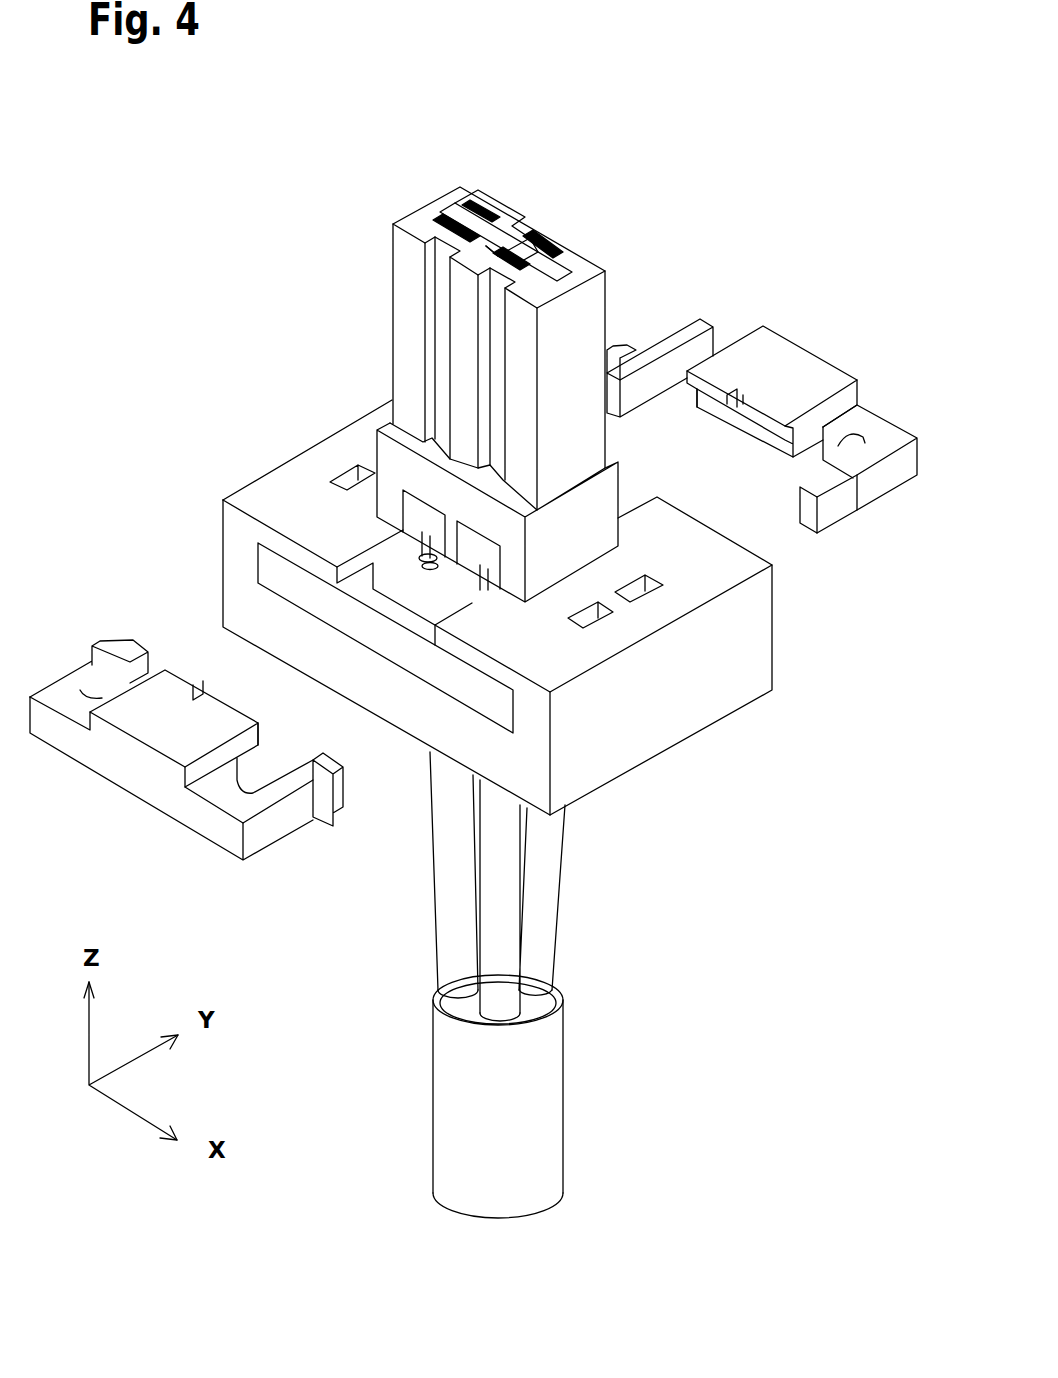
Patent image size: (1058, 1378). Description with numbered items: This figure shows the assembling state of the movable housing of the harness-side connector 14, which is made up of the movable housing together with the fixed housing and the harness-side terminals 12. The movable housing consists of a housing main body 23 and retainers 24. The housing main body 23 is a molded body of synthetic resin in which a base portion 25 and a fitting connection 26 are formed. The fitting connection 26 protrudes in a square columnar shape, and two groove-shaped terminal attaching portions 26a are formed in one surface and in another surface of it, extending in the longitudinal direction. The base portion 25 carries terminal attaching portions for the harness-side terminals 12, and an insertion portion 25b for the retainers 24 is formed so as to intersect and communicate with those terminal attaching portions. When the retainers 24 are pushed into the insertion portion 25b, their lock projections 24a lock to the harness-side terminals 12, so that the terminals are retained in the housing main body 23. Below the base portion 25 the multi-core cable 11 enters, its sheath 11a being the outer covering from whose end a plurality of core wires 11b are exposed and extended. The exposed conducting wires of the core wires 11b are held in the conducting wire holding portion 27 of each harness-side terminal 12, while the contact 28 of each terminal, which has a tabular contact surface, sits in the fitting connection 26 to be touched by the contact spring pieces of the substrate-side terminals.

The multi-core cable 11 is at (563, 1087).
The sheath 11a is at (433, 1083).
The core wires 11b is at (537, 977).
The harness-side terminals 12 is at (553, 252).
The harness-side connector 14 is at (630, 139).
The housing main body 23 is at (398, 262).
The retainers 24 is at (785, 353).
The lock projections 24a is at (772, 423).
The base portion 25 is at (640, 697).
The insertion portion 25b is at (300, 590).
The fitting connection 26 is at (400, 242).
The terminal attaching portions 26a is at (443, 222).
The conducting wire holding portion 27 is at (423, 565).
The contact 28 is at (498, 235).